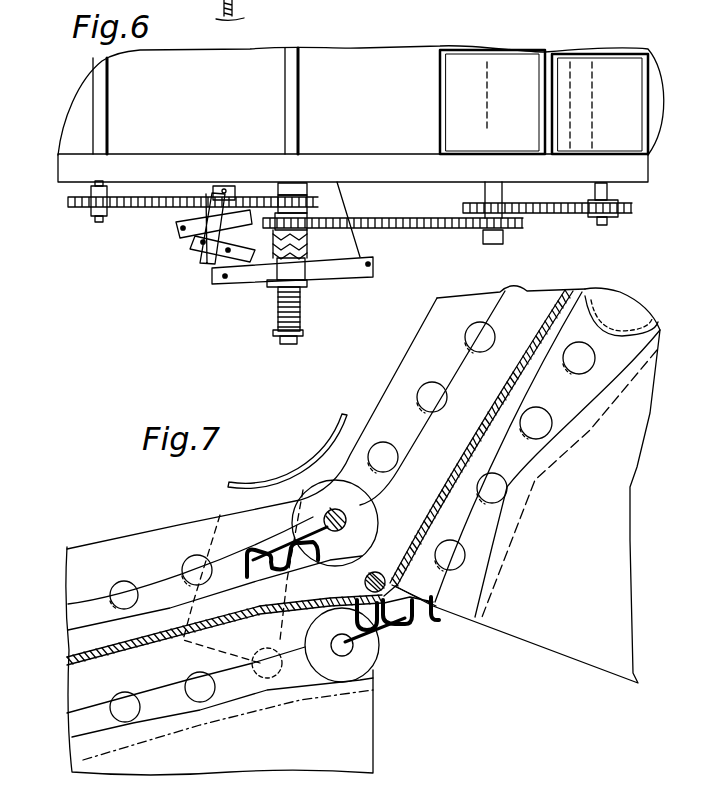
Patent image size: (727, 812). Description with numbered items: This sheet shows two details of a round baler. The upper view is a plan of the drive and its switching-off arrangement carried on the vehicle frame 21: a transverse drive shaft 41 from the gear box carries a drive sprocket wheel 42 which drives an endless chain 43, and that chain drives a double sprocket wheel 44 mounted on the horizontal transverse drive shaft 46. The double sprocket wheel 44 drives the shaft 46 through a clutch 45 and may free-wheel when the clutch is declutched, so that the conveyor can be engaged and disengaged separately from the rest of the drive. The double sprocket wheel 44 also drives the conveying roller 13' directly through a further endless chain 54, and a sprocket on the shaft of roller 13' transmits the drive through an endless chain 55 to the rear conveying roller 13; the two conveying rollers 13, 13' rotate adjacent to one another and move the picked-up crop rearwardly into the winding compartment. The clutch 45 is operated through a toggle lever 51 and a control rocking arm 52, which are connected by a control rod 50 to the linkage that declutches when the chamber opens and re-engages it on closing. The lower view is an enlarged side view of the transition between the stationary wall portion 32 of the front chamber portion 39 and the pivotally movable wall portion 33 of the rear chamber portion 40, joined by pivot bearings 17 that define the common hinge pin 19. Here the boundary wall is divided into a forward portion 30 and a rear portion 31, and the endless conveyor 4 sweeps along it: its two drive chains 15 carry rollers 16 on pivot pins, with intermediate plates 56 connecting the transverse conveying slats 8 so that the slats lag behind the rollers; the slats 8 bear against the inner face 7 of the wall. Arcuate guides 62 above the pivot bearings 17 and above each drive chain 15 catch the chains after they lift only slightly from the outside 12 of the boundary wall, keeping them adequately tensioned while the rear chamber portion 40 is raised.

In FIG. 7, the endless conveyor 4 is at (168, 551).
In FIG. 7, the inner face 7 is at (432, 437).
In FIG. 7, the transverse conveying slats 8 is at (437, 623).
In FIG. 7, the outside of the boundary wall 12 is at (450, 447).
In FIG. 6, the rear conveying roller 13 is at (600, 79).
In FIG. 6, the conveying roller 13' is at (492, 79).
In FIG. 7, the drive chains 15 is at (455, 353).
In FIG. 7, the rollers 16 is at (372, 687).
In FIG. 7, the pivot bearings 17 is at (333, 470).
In FIG. 7, the hinge pin 19 is at (375, 569).
In FIG. 6, the vehicle frame 21 is at (374, 163).
In FIG. 7, the forward portion of the boundary wall 30 is at (65, 660).
In FIG. 7, the rear portion of the boundary wall 31 is at (478, 397).
In FIG. 7, the stationary wall portion 32 is at (127, 760).
In FIG. 7, the pivotally movable wall portion 33 is at (605, 658).
In FIG. 7, the front chamber portion 39 is at (379, 760).
In FIG. 7, the rear chamber portion 40 is at (557, 667).
In FIG. 6, the transverse drive shaft 41 is at (105, 128).
In FIG. 6, the drive sprocket wheel 42 is at (83, 214).
In FIG. 6, the endless chain 43 is at (165, 197).
In FIG. 6, the double sprocket wheel 44 is at (303, 197).
In FIG. 6, the clutch 45 is at (267, 285).
In FIG. 6, the drive shaft 46 is at (288, 113).
In FIG. 6, the control rod 50 is at (210, 262).
In FIG. 6, the toggle lever 51 is at (195, 240).
In FIG. 6, the control rocking arm 52 is at (327, 277).
In FIG. 6, the endless chain 54 is at (425, 230).
In FIG. 6, the endless chain 55 is at (545, 215).
In FIG. 7, the intermediate plates 56 is at (388, 633).
In FIG. 7, the arcuate guides 62 is at (258, 507).